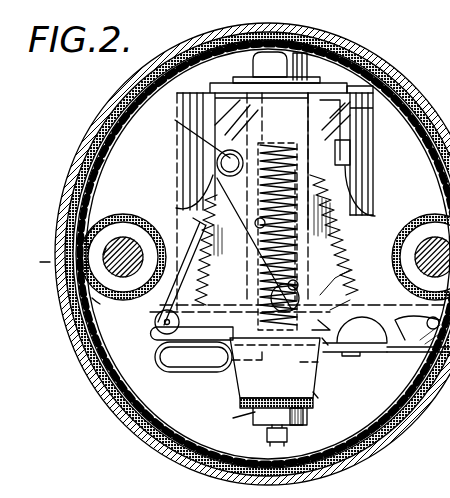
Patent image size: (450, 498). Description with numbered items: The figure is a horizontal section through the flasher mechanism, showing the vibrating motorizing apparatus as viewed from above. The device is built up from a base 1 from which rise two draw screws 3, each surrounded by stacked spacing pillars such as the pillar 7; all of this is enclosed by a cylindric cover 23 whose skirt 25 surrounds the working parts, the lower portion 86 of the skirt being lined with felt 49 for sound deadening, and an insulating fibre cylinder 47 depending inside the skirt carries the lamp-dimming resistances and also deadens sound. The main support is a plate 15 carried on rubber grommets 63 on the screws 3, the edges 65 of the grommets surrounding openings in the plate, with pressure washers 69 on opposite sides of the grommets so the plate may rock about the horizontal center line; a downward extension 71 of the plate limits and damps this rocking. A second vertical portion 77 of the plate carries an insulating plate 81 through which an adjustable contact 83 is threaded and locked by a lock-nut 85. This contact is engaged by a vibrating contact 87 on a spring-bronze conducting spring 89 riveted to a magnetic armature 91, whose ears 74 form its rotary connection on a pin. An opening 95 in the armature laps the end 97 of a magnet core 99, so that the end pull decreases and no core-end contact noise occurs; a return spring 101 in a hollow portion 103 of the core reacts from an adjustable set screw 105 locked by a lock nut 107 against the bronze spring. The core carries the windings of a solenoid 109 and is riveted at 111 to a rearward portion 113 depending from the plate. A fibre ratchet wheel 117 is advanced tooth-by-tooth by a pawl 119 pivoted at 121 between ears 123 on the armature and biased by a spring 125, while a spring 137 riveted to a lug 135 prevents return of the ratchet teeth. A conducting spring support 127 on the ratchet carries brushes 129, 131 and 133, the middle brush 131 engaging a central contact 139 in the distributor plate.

The base 1 is at (408, 418).
The draw screws 3 is at (120, 240).
The spacing pillar 7 is at (422, 220).
The plate 15 is at (162, 212).
The cover 23 is at (87, 119).
The skirt 25 is at (75, 346).
The insulating fibre cylinder 47 is at (82, 168).
The felt lining 49 is at (108, 408).
The rubber grommets 63 is at (78, 256).
The grommet edges 65 is at (84, 246).
The pressure washers 69 is at (86, 236).
The downward extension 71 is at (406, 353).
The ears 74 is at (357, 338).
The second vertical portion 77 is at (312, 380).
The insulating plate 81 is at (308, 415).
The adjustable contact 83 is at (288, 436).
The lock-nut 85 is at (252, 420).
The lower portion of skirt 86 is at (136, 436).
The vibrating contact 87 is at (315, 403).
The conducting spring 89 is at (228, 370).
The magnetic armature 91 is at (192, 343).
The armature opening 95 is at (320, 344).
The magnet core end 97 is at (365, 360).
The magnet core 99 is at (205, 122).
The return spring 101 is at (180, 170).
The hollow portion 103 is at (200, 137).
The adjustable set screw 105 is at (215, 92).
The lock nut 107 is at (252, 60).
The solenoid 109 is at (186, 150).
The rivet 111 is at (352, 100).
The rearward portion 113 is at (309, 80).
The ratchet wheel 117 is at (372, 202).
The pawl 119 is at (192, 194).
The pawl pivot 121 is at (158, 322).
The ears 123 is at (150, 336).
The spring 125 is at (135, 268).
The conducting spring support 127 is at (243, 244).
The outermost brush 129 is at (100, 165).
The middle brush 131 is at (315, 244).
The brush 133 is at (300, 300).
The lug 135 is at (368, 152).
The spring 137 is at (350, 150).
The central contact 139 is at (263, 286).